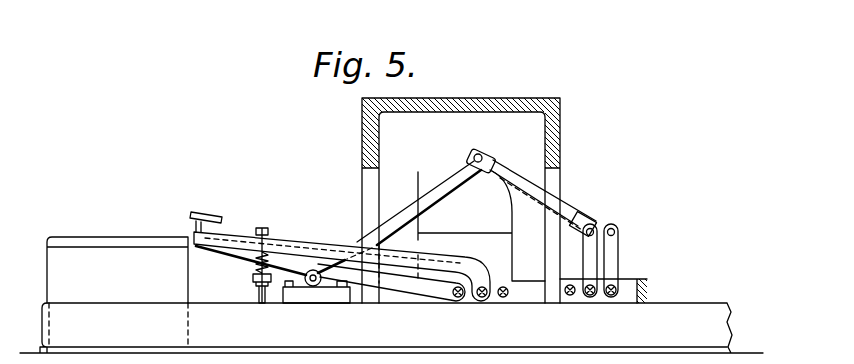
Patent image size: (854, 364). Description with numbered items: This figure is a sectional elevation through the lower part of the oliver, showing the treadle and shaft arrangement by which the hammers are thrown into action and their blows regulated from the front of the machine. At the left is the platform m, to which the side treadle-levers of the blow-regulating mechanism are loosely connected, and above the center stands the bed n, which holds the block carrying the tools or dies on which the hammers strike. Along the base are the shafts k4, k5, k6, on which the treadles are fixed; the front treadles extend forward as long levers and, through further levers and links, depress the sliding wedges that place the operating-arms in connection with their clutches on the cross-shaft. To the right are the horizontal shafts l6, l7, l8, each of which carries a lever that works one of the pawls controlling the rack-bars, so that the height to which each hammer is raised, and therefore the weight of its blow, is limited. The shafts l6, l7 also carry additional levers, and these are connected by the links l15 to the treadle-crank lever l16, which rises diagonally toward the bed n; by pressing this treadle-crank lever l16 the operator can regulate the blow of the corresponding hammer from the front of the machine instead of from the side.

The bed n is at (461, 189).
The platform m is at (117, 259).
The shaft k4 is at (458, 298).
The shaft k5 is at (483, 298).
The shaft k6 is at (503, 298).
The horizontal shaft l6 is at (612, 297).
The horizontal shaft l7 is at (590, 297).
The horizontal shaft l8 is at (570, 296).
The link l15 is at (598, 196).
The treadle-crank lever l16 is at (414, 210).